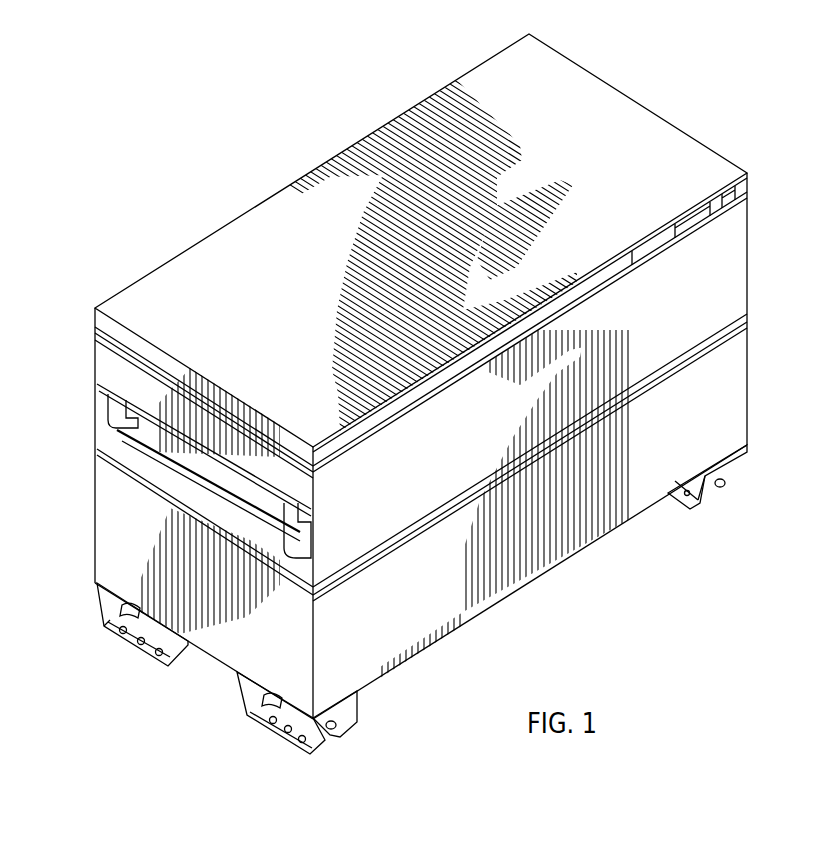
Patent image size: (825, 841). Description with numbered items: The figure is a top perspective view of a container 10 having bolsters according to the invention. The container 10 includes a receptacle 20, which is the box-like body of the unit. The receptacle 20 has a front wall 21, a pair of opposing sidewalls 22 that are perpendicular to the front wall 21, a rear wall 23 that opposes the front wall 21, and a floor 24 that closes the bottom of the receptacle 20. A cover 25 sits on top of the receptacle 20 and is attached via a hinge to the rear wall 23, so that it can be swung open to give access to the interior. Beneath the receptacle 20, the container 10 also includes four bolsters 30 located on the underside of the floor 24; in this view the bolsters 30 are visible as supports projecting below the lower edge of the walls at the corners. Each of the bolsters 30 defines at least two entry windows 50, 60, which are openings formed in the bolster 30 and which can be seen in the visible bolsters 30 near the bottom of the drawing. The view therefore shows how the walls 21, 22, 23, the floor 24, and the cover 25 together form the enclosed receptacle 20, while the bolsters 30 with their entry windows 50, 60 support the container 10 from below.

The container 10 is at (659, 70).
The receptacle 20 is at (766, 263).
The front wall 21 is at (458, 467).
The sidewalls 22 is at (283, 660).
The rear wall 23 is at (186, 224).
The floor 24 is at (556, 592).
The cover 25 is at (650, 179).
The bolsters 30 is at (730, 466).
The entry window 50 is at (352, 740).
The entry window 60 is at (112, 633).